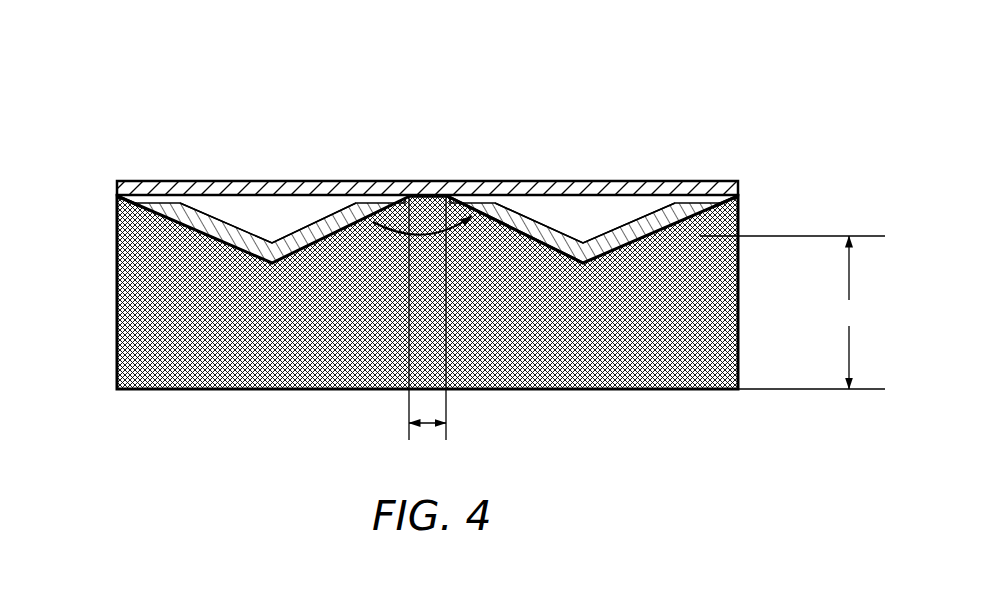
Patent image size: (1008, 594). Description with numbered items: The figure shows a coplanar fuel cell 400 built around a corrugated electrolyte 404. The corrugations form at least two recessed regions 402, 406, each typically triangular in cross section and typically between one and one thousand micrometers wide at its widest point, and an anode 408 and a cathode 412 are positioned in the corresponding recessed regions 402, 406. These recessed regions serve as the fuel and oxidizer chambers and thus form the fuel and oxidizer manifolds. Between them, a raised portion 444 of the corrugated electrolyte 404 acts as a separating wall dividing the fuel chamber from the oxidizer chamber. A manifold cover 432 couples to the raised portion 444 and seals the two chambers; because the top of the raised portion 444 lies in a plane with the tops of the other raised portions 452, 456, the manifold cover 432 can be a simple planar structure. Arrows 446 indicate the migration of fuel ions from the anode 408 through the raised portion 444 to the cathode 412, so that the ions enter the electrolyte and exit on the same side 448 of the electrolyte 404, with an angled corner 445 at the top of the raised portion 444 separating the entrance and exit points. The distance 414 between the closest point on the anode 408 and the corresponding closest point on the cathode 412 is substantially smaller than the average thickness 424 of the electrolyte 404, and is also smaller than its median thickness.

The fuel cell 400 is at (553, 92).
The recessed region 402 is at (280, 211).
The corrugated electrolyte 404 is at (117, 303).
The recessed region 406 is at (580, 211).
The anode 408 is at (333, 212).
The cathode 412 is at (645, 225).
The distance 414 is at (427, 427).
The average thickness 424 is at (792, 312).
The manifold cover 432 is at (163, 181).
The raised portion 444 is at (463, 244).
The angled corner 445 is at (430, 196).
The arrows 446 is at (394, 232).
The same side 448 is at (206, 229).
The raised portion 452 is at (130, 211).
The raised portion 456 is at (732, 206).